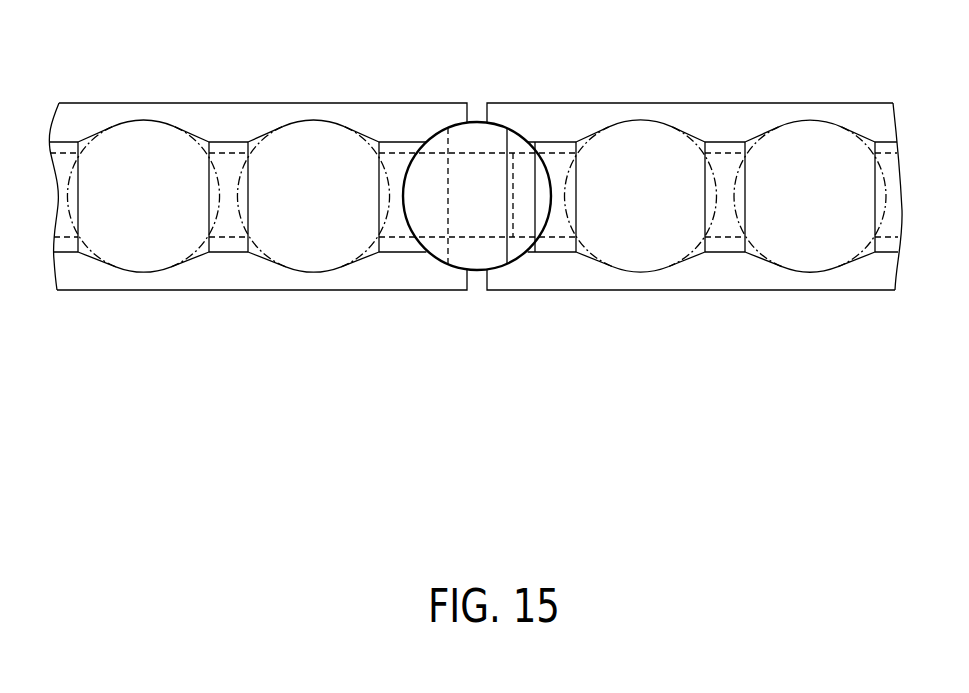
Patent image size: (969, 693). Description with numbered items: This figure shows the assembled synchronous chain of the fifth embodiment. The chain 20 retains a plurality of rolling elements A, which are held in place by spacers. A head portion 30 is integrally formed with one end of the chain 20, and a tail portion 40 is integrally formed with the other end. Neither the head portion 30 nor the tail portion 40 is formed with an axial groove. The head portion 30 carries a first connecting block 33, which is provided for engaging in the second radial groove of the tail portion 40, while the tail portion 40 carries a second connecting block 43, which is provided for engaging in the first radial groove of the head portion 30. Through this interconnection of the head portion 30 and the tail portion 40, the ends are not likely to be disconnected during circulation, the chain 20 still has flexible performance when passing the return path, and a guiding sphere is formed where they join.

The chain 20 is at (202, 308).
The head portion 30 is at (522, 268).
The tail portion 40 is at (494, 197).
The first connecting block 33 is at (432, 168).
The second connecting block 43 is at (512, 145).
The rolling elements A is at (322, 230).